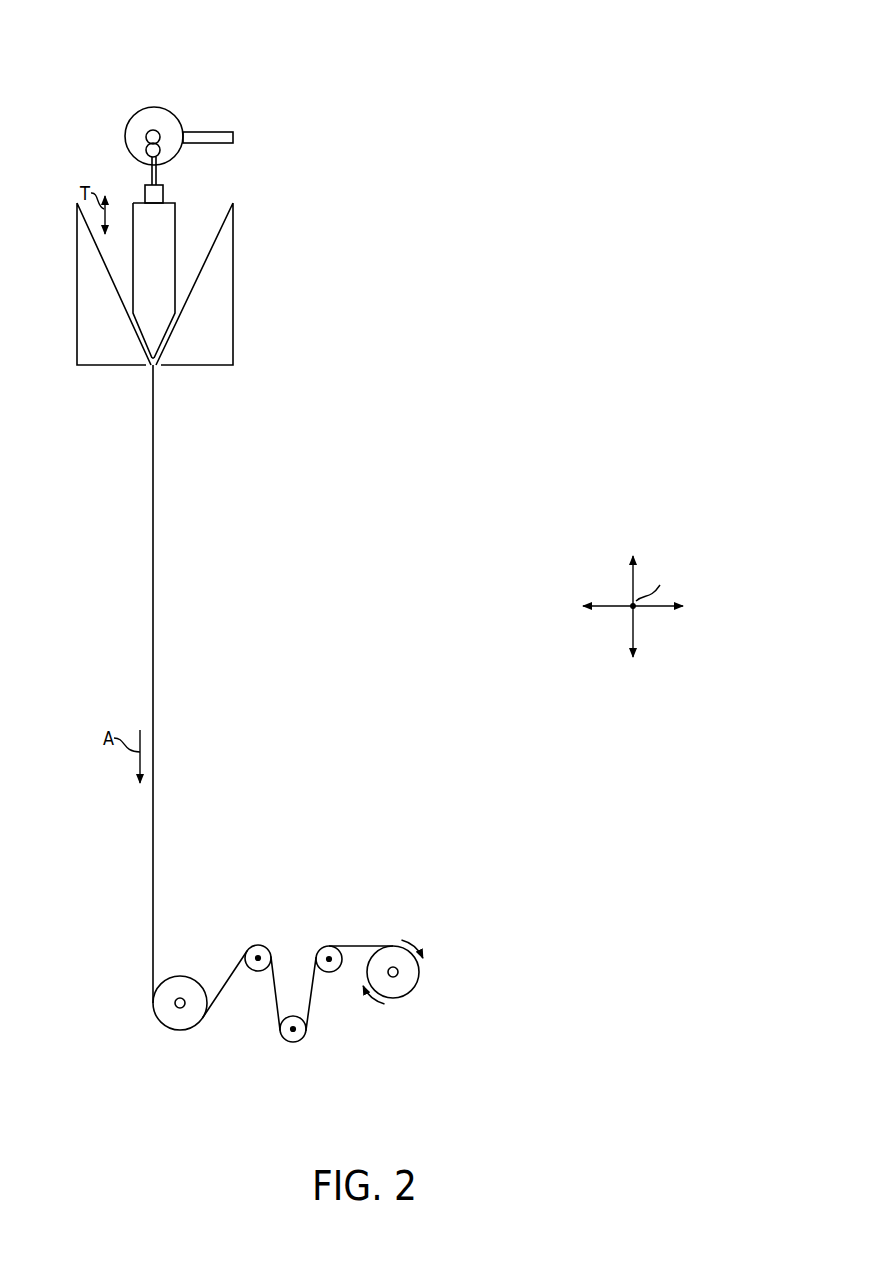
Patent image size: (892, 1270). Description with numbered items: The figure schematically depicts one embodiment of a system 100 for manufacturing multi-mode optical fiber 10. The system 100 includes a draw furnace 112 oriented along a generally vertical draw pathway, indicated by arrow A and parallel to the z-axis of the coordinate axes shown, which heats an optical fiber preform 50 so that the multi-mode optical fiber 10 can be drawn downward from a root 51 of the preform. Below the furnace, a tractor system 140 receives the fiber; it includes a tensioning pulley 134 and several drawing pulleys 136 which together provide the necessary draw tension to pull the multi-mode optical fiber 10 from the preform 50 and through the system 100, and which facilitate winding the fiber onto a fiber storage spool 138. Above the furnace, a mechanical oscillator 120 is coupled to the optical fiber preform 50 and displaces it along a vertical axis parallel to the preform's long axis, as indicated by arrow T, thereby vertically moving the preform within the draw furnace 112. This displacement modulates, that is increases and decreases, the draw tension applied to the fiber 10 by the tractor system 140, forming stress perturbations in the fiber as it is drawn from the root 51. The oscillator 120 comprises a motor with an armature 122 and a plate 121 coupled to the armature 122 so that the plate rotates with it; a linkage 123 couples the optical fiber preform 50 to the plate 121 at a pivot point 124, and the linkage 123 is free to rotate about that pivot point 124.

The multi-mode optical fiber 10 is at (165, 662).
The optical fiber preform 50 is at (178, 265).
The root 51 is at (157, 367).
The system 100 is at (447, 297).
The draw furnace 112 is at (240, 252).
The mechanical oscillator 120 is at (180, 91).
The plate 121 is at (184, 122).
The armature 122 is at (151, 131).
The linkage 123 is at (130, 162).
The pivot point 124 is at (161, 151).
The tensioning pulley 134 is at (172, 1031).
The drawing pulleys 136 is at (258, 972).
The fiber storage spool 138 is at (403, 995).
The tractor system 140 is at (485, 925).